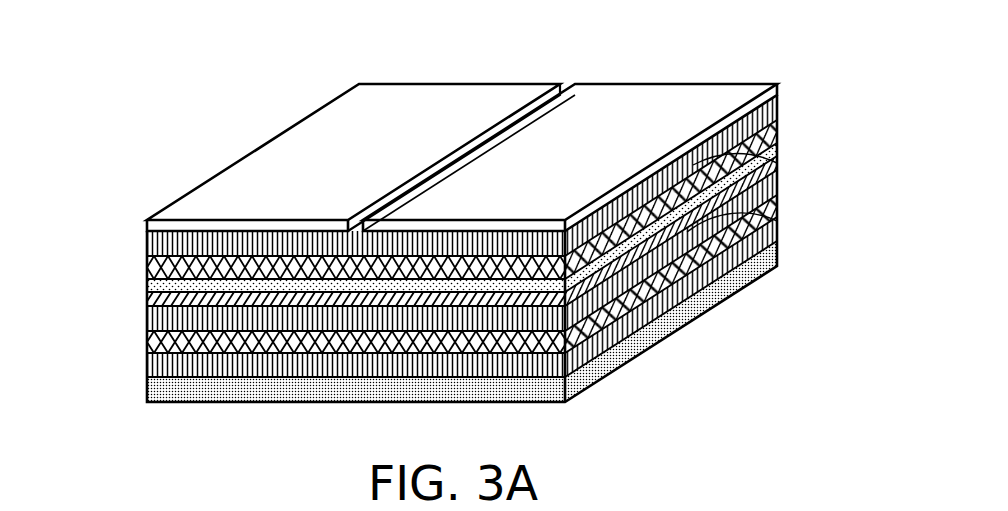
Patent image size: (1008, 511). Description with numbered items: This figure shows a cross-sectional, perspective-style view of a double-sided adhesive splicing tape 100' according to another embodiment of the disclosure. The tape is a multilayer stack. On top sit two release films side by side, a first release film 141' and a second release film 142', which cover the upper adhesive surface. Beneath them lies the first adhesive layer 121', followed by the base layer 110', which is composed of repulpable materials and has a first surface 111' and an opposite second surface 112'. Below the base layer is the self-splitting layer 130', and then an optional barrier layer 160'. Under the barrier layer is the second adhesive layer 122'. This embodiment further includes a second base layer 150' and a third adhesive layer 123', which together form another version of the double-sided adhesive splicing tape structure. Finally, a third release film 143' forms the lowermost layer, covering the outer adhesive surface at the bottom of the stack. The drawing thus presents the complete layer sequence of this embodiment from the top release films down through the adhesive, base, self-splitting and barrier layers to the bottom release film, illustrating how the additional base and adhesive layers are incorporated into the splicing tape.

The double-sided adhesive splicing tape 100' is at (451, 248).
The first release film 141' is at (351, 157).
The second release film 142' is at (604, 127).
The first adhesive layer 121' is at (414, 175).
The base layer 110' is at (414, 199).
The first surface 111' is at (777, 162).
The second surface 112' is at (774, 223).
The self-splitting layer 130' is at (414, 223).
The barrier layer 160' is at (414, 245).
The second adhesive layer 122' is at (414, 268).
The second base layer 150' is at (414, 298).
The third adhesive layer 123' is at (414, 327).
The third release film 143' is at (414, 357).